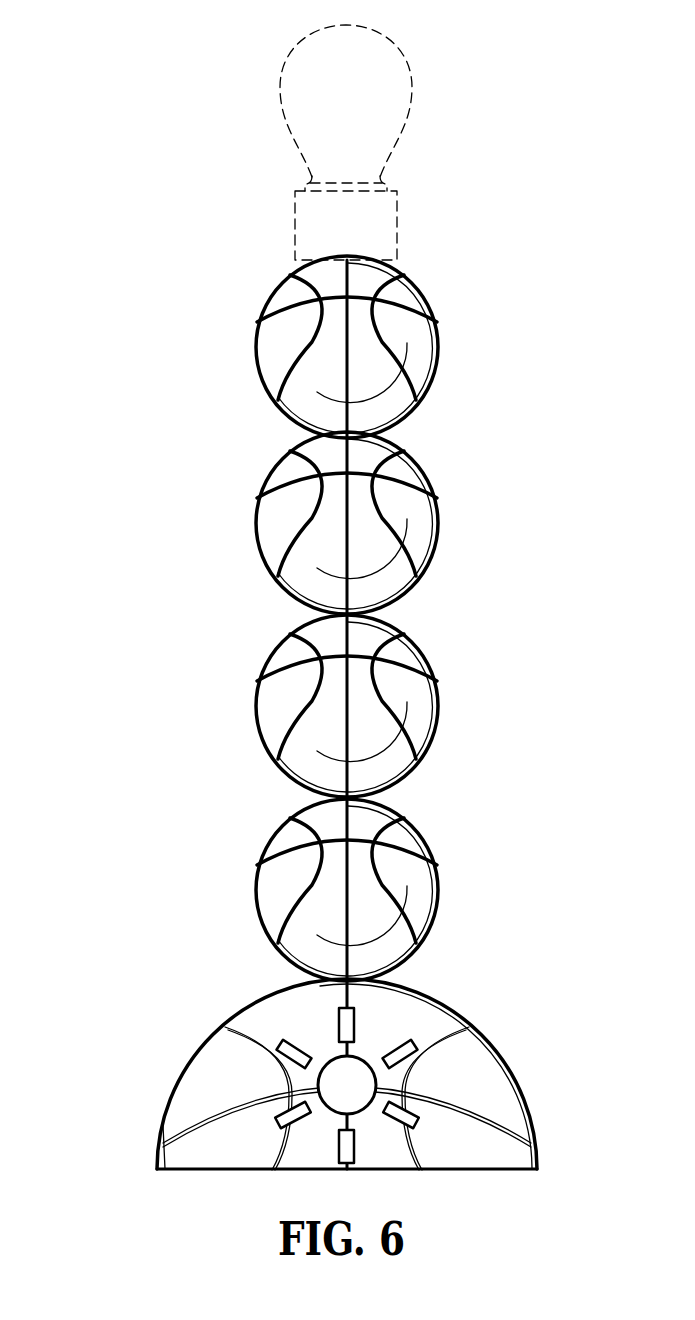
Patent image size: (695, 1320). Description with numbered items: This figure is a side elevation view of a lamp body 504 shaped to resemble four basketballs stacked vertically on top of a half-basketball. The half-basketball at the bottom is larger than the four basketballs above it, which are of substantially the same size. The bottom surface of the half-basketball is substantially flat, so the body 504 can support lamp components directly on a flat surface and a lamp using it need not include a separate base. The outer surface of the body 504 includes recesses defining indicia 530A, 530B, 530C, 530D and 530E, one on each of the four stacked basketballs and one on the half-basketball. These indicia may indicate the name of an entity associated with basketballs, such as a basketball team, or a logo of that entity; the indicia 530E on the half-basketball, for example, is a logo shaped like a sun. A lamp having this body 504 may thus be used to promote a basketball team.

The body 504 is at (78, 85).
The indicia 530A is at (373, 371).
The indicia 530B is at (373, 556).
The indicia 530C is at (373, 741).
The indicia 530D is at (373, 926).
The indicia 530E is at (380, 1031).